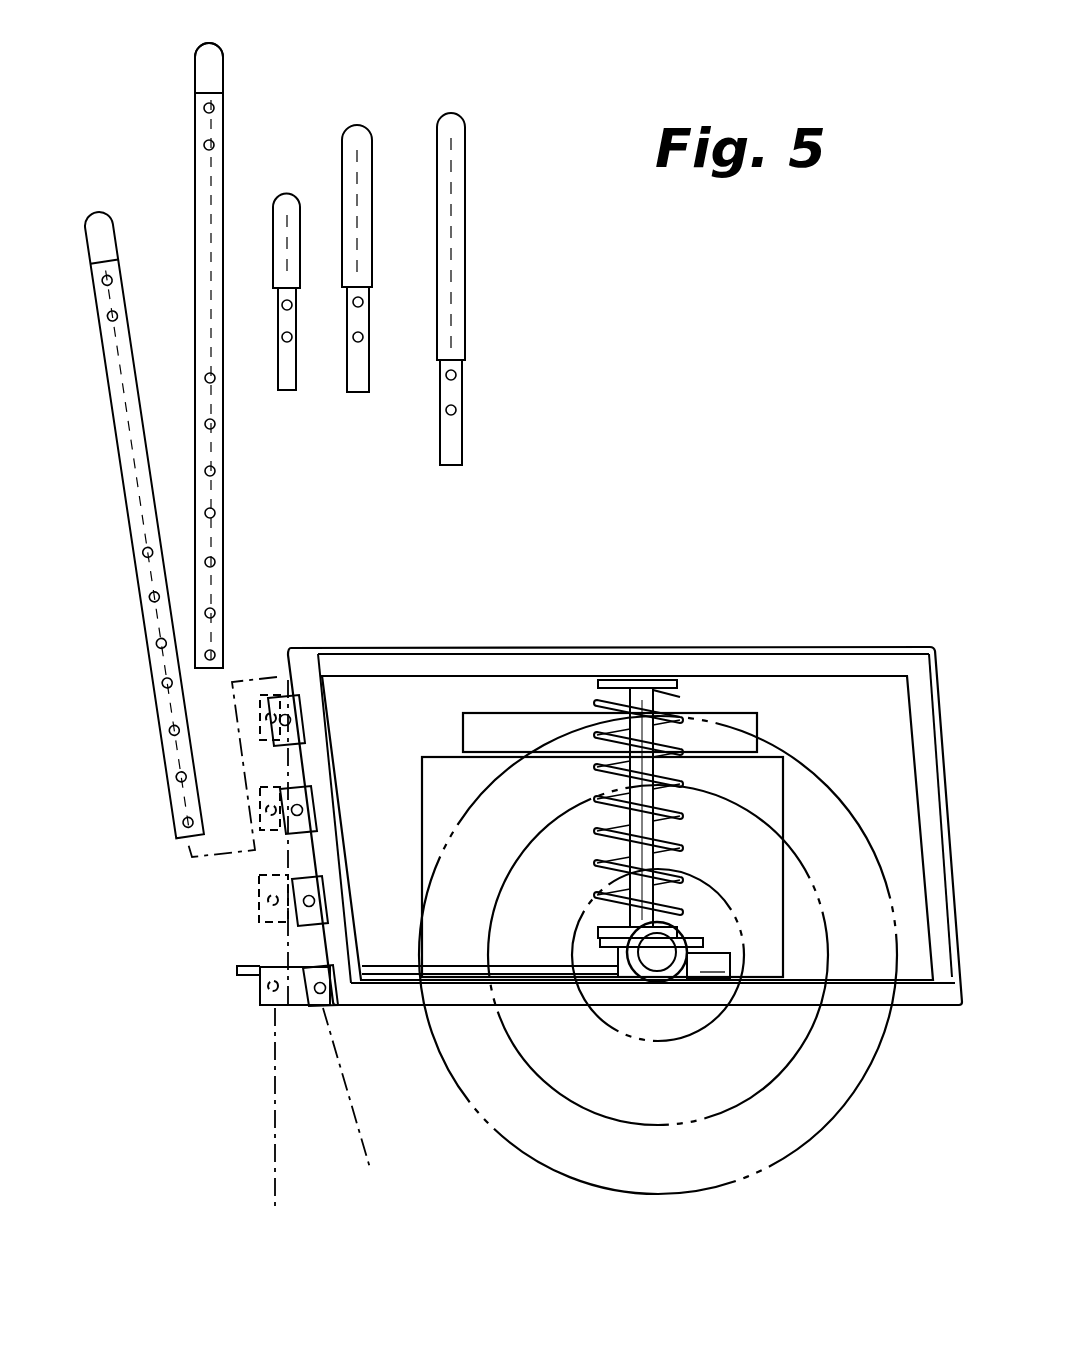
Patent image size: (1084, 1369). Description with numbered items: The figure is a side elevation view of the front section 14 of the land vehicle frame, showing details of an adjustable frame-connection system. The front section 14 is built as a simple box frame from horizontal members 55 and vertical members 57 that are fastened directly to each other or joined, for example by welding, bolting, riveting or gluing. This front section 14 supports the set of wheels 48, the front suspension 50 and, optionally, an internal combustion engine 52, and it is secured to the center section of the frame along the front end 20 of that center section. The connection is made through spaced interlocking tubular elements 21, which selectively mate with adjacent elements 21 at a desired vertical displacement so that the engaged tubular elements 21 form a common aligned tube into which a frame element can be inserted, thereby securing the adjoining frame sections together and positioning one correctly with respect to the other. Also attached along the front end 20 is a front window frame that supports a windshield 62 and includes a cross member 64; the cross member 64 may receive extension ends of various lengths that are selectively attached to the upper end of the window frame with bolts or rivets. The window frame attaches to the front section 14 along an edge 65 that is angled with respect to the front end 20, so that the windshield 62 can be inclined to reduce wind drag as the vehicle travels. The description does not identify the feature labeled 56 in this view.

The front section 14 is at (707, 470).
The front end 20 is at (288, 657).
The tubular elements 21 is at (262, 898).
The set of wheels 48 is at (772, 1140).
The front suspension 50 is at (600, 704).
The internal combustion engine 52 is at (481, 712).
The horizontal members 55 is at (738, 665).
The pivot axis 56 is at (272, 1165).
The vertical members 57 is at (915, 778).
The windshield 62 is at (205, 233).
The cross member 64 is at (203, 66).
The edge 65 is at (386, 1162).